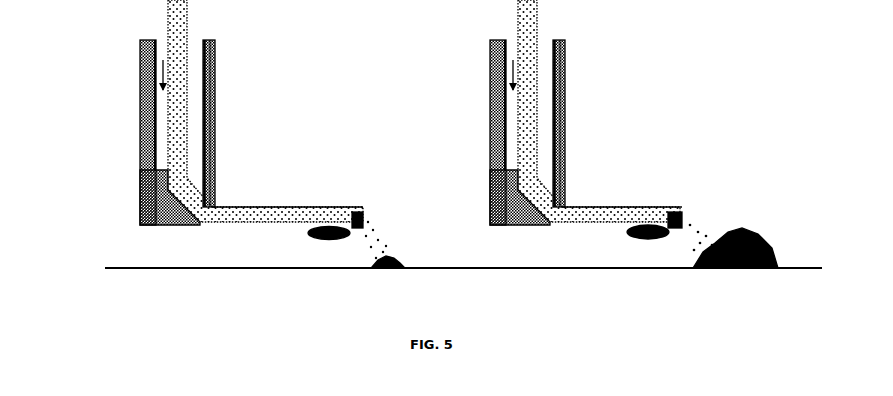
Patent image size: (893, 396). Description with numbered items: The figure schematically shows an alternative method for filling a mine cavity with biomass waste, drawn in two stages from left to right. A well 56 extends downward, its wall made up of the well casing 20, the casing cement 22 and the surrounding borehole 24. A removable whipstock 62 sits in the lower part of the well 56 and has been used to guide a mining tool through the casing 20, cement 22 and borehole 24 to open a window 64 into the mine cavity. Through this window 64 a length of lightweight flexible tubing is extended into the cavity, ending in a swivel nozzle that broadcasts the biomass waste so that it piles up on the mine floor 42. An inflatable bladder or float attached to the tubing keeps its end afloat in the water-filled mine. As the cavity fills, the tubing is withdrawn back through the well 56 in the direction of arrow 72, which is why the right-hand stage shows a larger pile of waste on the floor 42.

The well casing 20 is at (208, 101).
The casing cement 22 is at (214, 78).
The borehole 24 is at (219, 55).
The floor 42 is at (314, 272).
The well 56 is at (256, 133).
The removable whipstock 62 is at (158, 208).
The window 64 is at (212, 227).
The arrow 72 is at (626, 203).